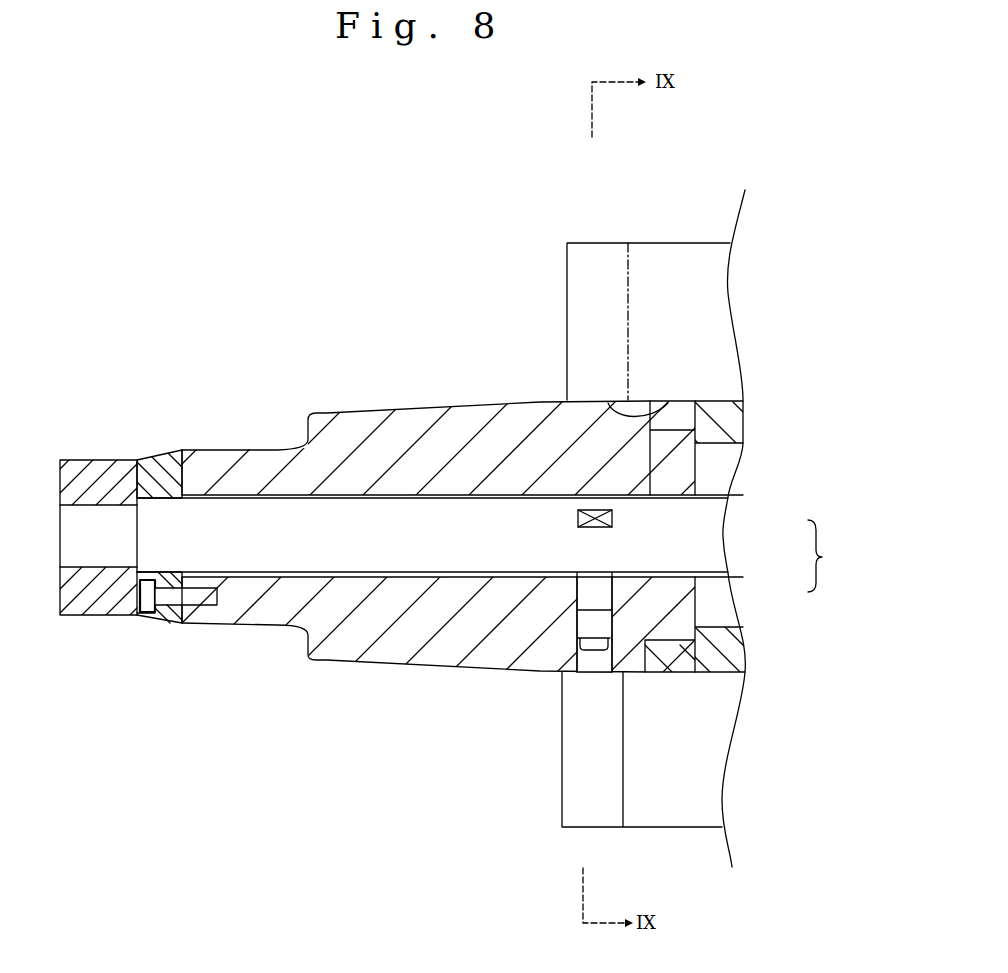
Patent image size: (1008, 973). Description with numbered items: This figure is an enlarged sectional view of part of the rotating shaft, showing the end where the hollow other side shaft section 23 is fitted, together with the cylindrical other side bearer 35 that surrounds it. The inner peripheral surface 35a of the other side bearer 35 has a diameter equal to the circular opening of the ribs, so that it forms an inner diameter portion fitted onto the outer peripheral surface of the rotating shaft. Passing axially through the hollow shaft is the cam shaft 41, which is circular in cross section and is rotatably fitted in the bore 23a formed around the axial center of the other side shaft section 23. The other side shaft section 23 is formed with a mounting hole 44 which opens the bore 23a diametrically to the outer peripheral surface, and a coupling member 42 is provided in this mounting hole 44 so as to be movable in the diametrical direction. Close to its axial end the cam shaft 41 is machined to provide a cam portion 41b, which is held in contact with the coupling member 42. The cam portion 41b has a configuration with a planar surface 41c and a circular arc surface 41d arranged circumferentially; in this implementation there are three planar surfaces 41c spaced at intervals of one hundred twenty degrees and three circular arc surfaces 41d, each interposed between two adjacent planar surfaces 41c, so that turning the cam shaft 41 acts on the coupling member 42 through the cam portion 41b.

The other side shaft section 23 is at (402, 438).
The bore 23a is at (460, 498).
The other side bearer 35 is at (598, 242).
The inner peripheral surface 35a is at (665, 410).
The cam shaft 41 is at (397, 537).
The cam portion 41b is at (838, 556).
The planar surface 41c is at (615, 518).
The circular arc surface 41d is at (598, 552).
The coupling member 42 is at (593, 628).
The mounting hole 44 is at (577, 625).